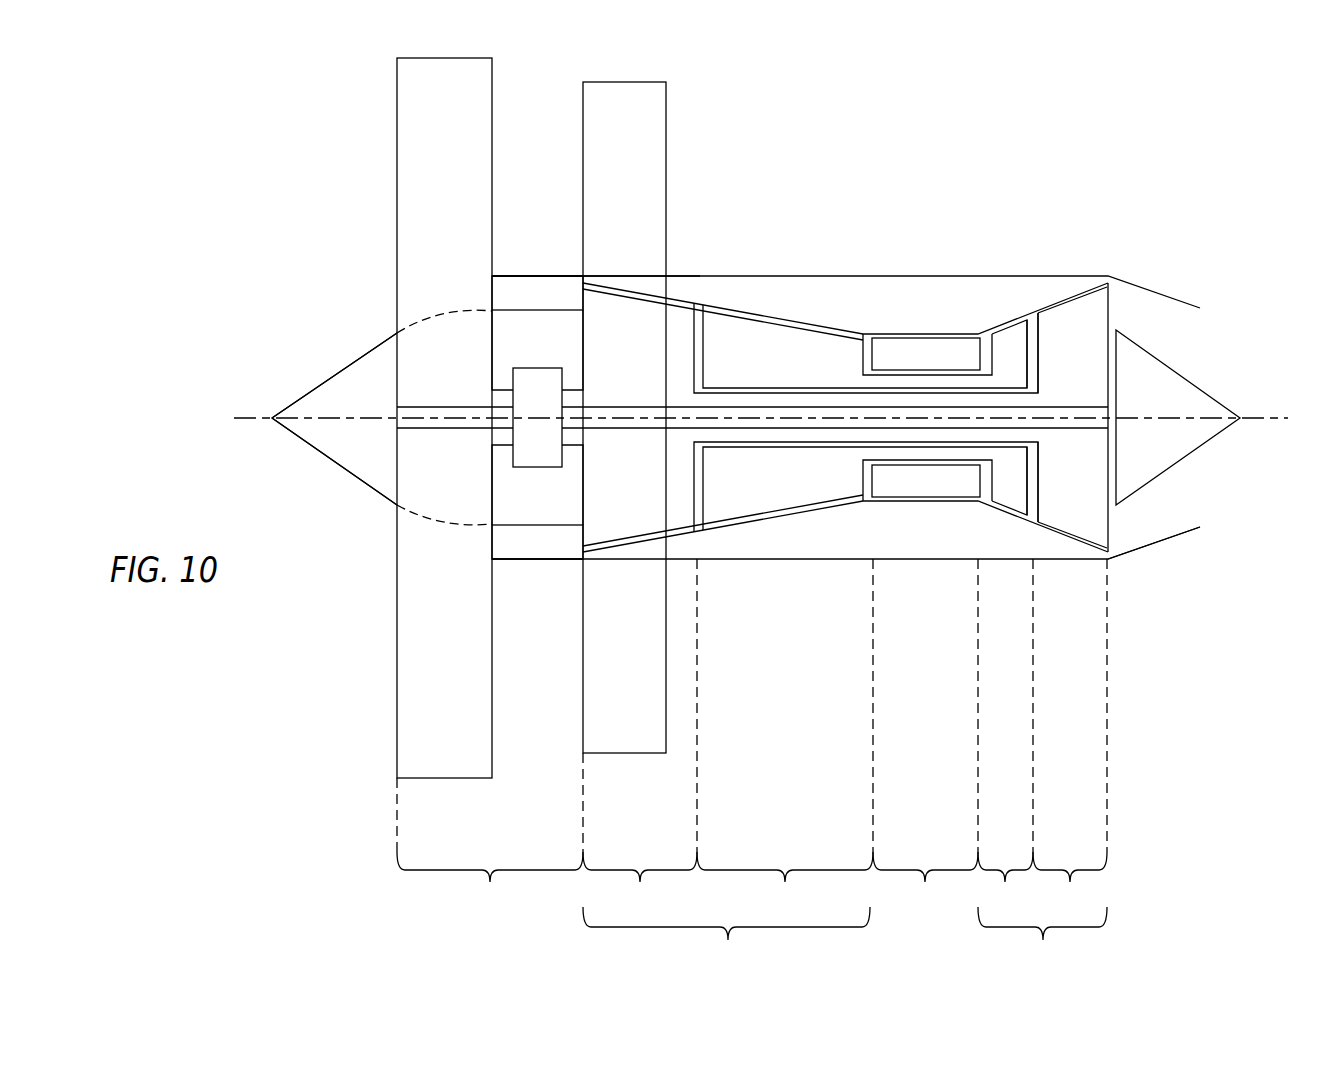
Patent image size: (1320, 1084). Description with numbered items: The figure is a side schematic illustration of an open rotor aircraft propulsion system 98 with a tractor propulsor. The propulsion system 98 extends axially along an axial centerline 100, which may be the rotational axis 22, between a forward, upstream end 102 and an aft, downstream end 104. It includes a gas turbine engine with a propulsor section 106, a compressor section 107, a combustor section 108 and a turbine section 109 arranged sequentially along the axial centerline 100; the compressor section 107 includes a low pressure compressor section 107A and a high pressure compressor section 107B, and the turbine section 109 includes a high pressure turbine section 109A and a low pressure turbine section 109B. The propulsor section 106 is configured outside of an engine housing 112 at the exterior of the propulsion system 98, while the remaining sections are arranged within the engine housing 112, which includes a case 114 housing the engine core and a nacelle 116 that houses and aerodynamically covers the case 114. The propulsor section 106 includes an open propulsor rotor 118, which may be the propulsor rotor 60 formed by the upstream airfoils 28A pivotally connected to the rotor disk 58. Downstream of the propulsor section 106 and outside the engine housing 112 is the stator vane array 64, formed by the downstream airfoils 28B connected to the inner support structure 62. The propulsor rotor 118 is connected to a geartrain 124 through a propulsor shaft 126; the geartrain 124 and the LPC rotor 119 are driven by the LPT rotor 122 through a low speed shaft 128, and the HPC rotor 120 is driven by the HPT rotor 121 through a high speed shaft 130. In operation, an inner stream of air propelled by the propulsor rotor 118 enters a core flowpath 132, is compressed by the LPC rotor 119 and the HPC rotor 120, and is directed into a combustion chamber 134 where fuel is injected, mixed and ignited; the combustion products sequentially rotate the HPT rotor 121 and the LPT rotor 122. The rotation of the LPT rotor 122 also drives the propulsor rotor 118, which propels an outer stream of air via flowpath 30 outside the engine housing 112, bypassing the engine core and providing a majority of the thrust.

The rotational axis 22 is at (739, 503).
The axial centerline 100 is at (1278, 427).
The open rotor aircraft propulsion system 98 is at (262, 122).
The propulsor rotor 60 is at (382, 410).
The open propulsor rotor 118 is at (383, 86).
The stator vane array 64 is at (690, 84).
The upstream airfoil 28A is at (397, 184).
The downstream airfoil 28B is at (665, 178).
The flowpath 30 is at (548, 212).
The inner support structure 62 is at (642, 276).
The case 114 is at (767, 303).
The nacelle 116 is at (836, 276).
The engine housing 112 is at (941, 266).
The core flowpath 132 is at (548, 303).
The propulsor shaft 126 is at (492, 372).
The low speed shaft 128 is at (572, 373).
The geartrain 124 is at (552, 422).
The high speed shaft 130 is at (865, 357).
The combustion chamber 134 is at (945, 357).
The upstream end 102 is at (273, 417).
The downstream end 104 is at (1241, 417).
The rotor disk 58 is at (395, 470).
The LPC rotor 119 is at (580, 495).
The HPC rotor 120 is at (694, 503).
The HPT rotor 121 is at (1027, 485).
The LPT rotor 122 is at (1108, 527).
The propulsor section 106 is at (490, 725).
The compressor section 107 is at (728, 908).
The low pressure compressor section 107A is at (640, 882).
The high pressure compressor section 107B is at (785, 882).
The combustor section 108 is at (925, 882).
The turbine section 109 is at (1042, 908).
The high pressure turbine section 109A is at (1005, 882).
The low pressure turbine section 109B is at (1070, 882).